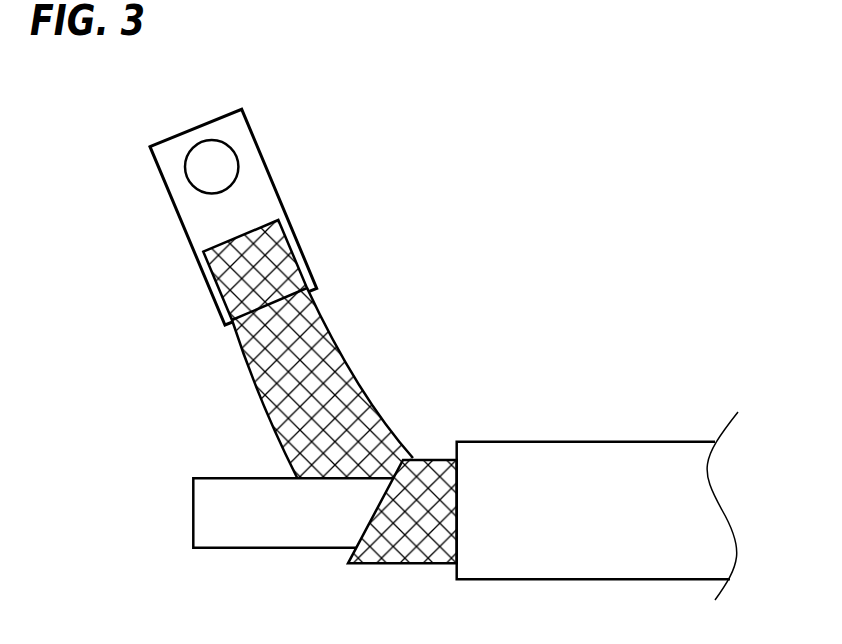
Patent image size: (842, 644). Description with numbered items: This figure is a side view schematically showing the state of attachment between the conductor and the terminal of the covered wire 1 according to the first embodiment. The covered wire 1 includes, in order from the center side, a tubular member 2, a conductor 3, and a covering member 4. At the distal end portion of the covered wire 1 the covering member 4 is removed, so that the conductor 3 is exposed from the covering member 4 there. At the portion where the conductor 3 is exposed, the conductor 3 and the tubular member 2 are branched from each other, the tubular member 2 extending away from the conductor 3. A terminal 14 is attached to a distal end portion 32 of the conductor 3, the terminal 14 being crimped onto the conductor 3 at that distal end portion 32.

The covered wire 1 is at (444, 363).
The tubular member 2 is at (247, 525).
The conductor 3 is at (418, 532).
The covering member 4 is at (602, 468).
The terminal 14 is at (253, 185).
The distal end portion 32 is at (268, 262).